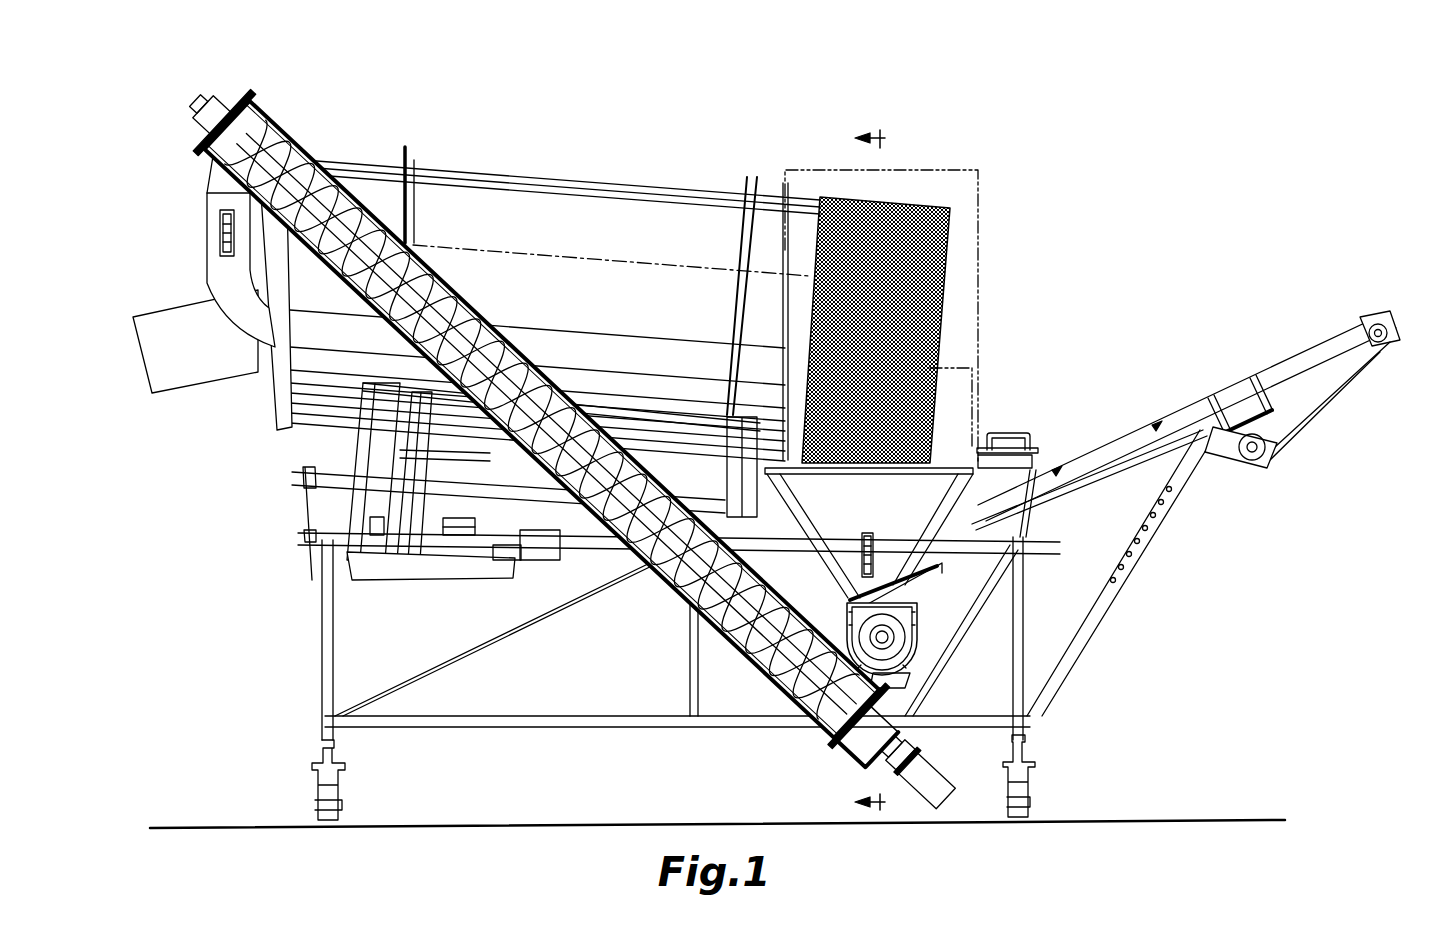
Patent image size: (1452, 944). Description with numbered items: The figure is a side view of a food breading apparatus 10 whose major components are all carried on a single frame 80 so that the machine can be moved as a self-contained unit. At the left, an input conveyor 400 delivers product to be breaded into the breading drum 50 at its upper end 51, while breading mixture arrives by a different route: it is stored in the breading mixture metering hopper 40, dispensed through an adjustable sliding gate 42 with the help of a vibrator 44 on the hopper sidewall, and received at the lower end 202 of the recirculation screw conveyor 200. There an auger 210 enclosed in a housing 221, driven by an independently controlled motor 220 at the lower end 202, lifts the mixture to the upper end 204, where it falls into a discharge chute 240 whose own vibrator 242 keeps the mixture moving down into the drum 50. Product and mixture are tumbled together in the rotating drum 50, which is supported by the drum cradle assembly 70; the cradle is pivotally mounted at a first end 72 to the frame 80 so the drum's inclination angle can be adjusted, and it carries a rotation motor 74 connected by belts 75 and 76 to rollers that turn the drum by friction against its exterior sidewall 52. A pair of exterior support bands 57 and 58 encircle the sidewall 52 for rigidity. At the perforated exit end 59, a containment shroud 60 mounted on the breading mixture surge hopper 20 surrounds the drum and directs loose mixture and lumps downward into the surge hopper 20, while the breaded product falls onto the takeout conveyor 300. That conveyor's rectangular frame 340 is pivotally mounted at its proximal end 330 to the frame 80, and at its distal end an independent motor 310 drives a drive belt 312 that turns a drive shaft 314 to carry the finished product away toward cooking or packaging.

The food breading apparatus 10 is at (1106, 226).
The breading mixture surge hopper 20 is at (910, 674).
The breading mixture metering hopper 40 is at (864, 513).
The adjustable sliding gate 42 is at (933, 630).
The vibrator 44 is at (860, 548).
The breading drum 50 is at (581, 311).
The upper end 51 is at (256, 412).
The exterior sidewall 52 is at (510, 200).
The exterior support band 57 is at (408, 162).
The exterior support band 58 is at (747, 197).
The exit end 59 is at (952, 298).
The containment shroud 60 is at (933, 170).
The drum cradle assembly 70 is at (340, 453).
The first end 72 is at (700, 500).
The rotation motor 74 is at (553, 562).
The belt 75 is at (477, 508).
The belt 76 is at (398, 512).
The frame 80 is at (319, 658).
The recirculation screw conveyor 200 is at (660, 587).
The lower end 202 is at (820, 742).
The upper end 204 is at (246, 96).
The auger 210 is at (773, 683).
The motor 220 is at (902, 730).
The housing 221 is at (290, 137).
The discharge chute 240 is at (207, 282).
The vibrator 242 is at (220, 240).
The takeout conveyor 300 is at (1356, 319).
The motor 310 is at (1258, 465).
The drive belt 312 is at (1323, 416).
The drive shaft 314 is at (1358, 384).
The proximal end 330 is at (978, 523).
The take out conveyor frame 340 is at (1395, 333).
The input conveyor 400 is at (211, 361).